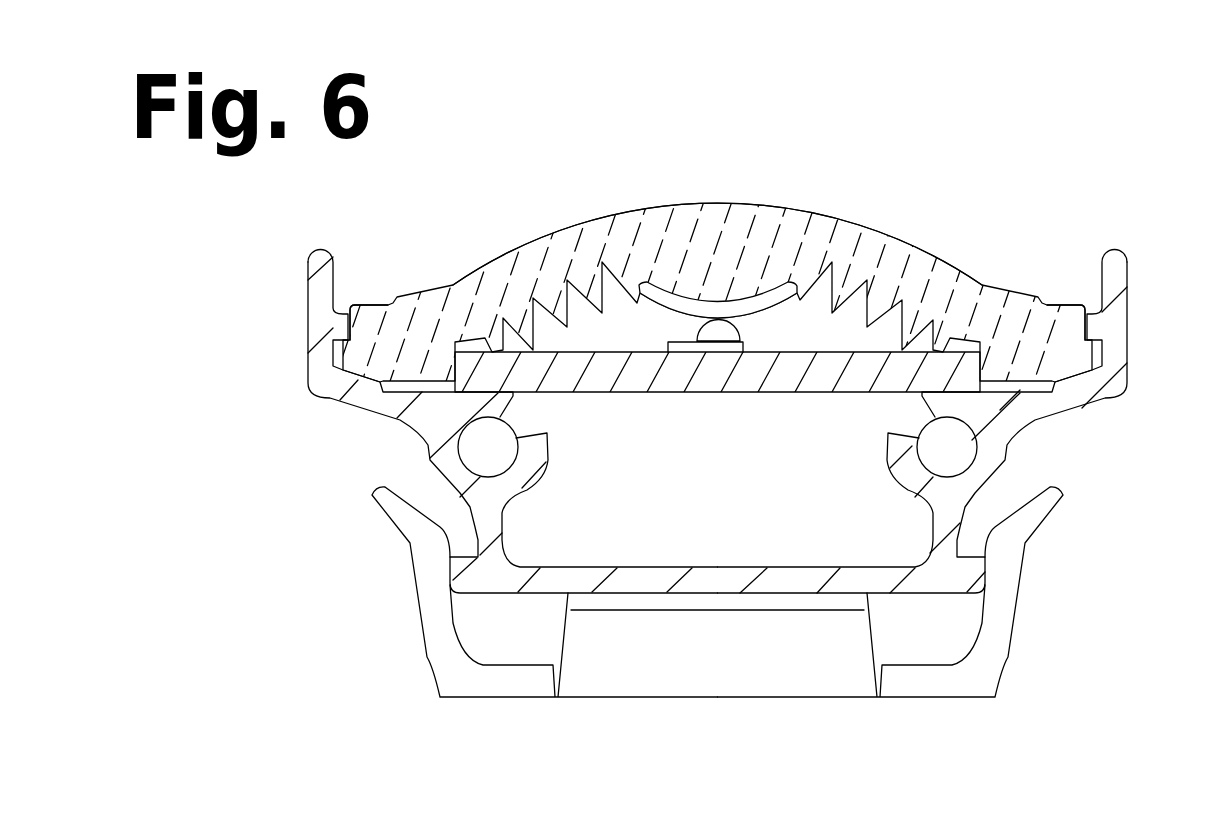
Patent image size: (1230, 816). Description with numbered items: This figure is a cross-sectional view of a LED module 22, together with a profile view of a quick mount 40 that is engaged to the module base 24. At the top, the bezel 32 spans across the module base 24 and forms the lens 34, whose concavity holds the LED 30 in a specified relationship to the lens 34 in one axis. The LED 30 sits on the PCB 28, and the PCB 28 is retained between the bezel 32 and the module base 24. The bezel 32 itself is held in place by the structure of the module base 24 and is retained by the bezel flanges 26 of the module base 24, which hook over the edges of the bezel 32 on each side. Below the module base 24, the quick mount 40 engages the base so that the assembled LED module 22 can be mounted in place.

The LED module 22 is at (243, 328).
The module base 24 is at (1003, 428).
The bezel flange 26 is at (351, 303).
The PCB 28 is at (800, 370).
The LED 30 is at (717, 333).
The bezel 32 is at (455, 238).
The lens 34 is at (730, 232).
The quick mount 40 is at (353, 608).